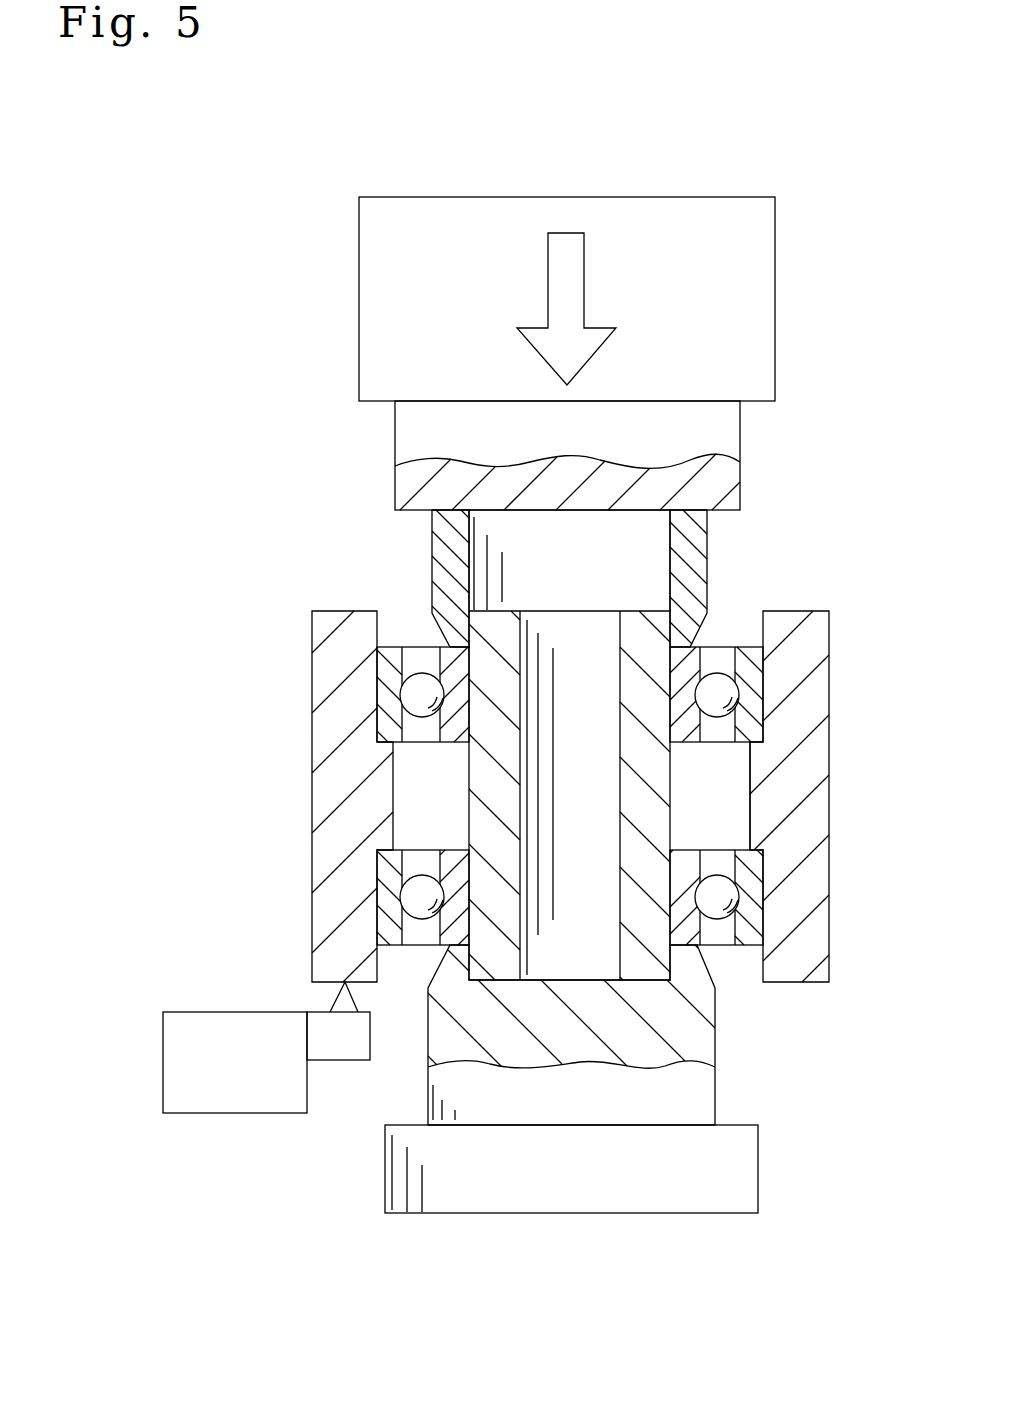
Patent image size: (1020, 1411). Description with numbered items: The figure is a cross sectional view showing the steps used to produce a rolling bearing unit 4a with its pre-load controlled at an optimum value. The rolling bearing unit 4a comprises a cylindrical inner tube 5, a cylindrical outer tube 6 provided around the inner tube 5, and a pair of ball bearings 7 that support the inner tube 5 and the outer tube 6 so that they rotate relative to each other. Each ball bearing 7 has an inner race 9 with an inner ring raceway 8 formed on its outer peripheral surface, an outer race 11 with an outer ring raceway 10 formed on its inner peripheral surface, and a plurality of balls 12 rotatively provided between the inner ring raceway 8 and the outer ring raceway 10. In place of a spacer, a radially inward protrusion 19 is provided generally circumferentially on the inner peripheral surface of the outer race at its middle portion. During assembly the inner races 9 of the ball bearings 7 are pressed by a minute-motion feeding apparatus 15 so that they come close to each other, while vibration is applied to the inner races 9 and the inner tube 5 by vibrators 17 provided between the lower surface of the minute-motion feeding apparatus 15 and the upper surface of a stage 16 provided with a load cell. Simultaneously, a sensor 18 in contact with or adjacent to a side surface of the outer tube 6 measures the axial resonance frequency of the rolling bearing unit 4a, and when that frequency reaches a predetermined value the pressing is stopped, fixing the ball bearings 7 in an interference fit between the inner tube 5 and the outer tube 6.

The rolling bearing unit 4a is at (338, 598).
The inner tube 5 is at (505, 685).
The outer tube 6 is at (797, 623).
The ball bearings 7 is at (763, 667).
The inner ring raceway 8 is at (700, 687).
The inner race 9 is at (405, 718).
The outer ring raceway 10 is at (737, 692).
The outer race 11 is at (387, 672).
The balls 12 is at (422, 680).
The minute-motion feeding apparatus 15 is at (739, 251).
The stage 16 is at (733, 1160).
The vibrators 17 is at (403, 487).
The sensor 18 is at (328, 1047).
The radially inward protrusion 19 is at (740, 758).